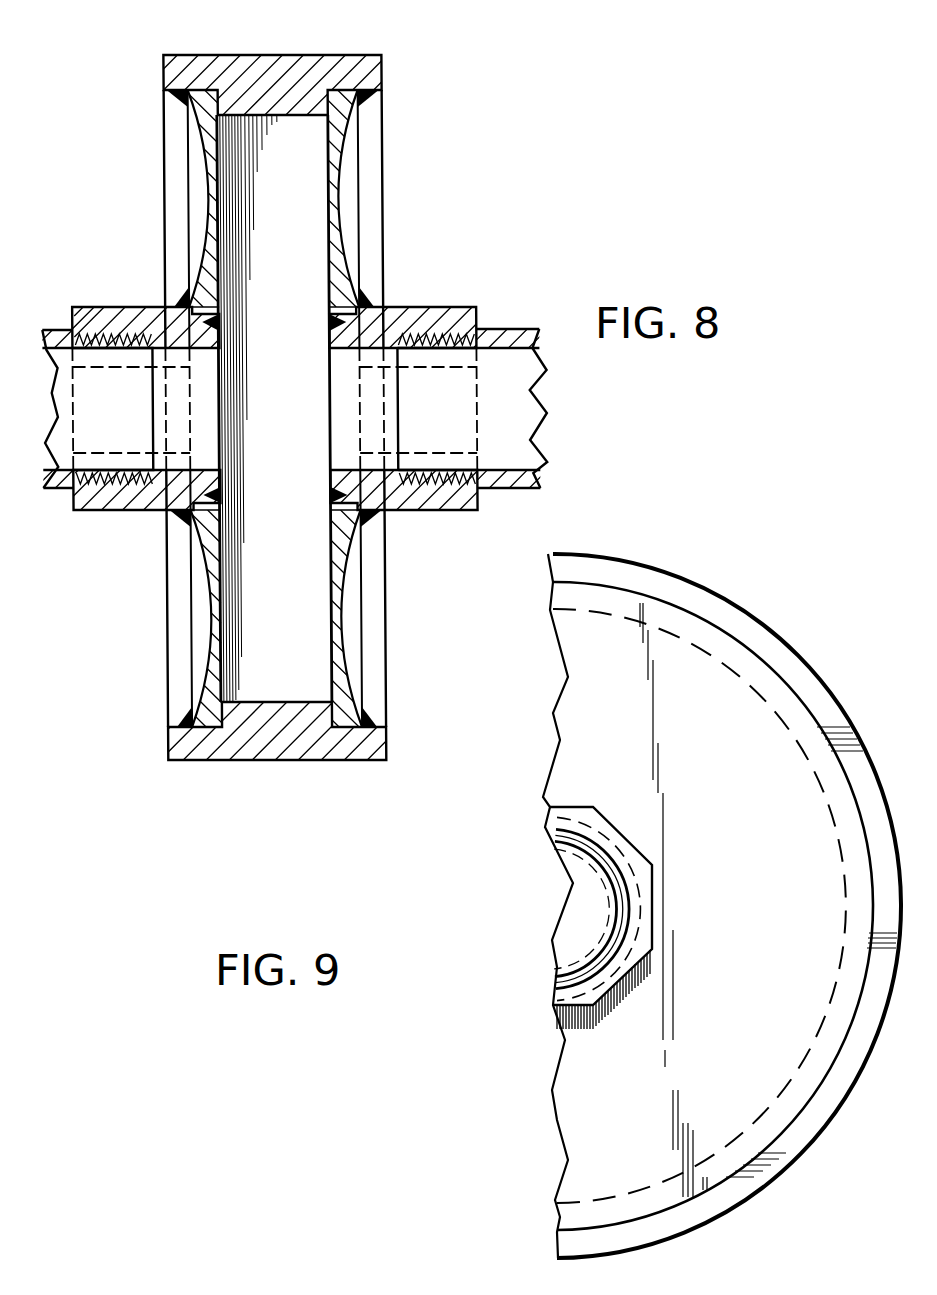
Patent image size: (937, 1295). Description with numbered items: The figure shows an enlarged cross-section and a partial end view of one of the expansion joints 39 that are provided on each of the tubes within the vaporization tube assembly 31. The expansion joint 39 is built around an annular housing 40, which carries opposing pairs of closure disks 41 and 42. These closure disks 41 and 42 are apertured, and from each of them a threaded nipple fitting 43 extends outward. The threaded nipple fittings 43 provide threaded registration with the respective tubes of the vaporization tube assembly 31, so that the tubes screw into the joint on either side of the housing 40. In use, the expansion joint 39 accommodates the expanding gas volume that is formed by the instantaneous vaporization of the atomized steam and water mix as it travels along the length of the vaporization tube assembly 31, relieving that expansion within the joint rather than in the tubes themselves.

In FIG. 8, the vaporization tube assembly 31 is at (63, 334).
In FIG. 9, the vaporization tube assembly 31 is at (623, 913).
In FIG. 8, the expansion joint 39 is at (400, 78).
In FIG. 9, the expansion joint 39 is at (776, 616).
In FIG. 8, the annular housing 40 is at (283, 64).
In FIG. 9, the annular housing 40 is at (635, 576).
In FIG. 8, the closure disk 41 is at (175, 243).
In FIG. 9, the closure disk 41 is at (582, 660).
In FIG. 8, the closure disk 42 is at (207, 185).
In FIG. 9, the closure disk 42 is at (568, 598).
In FIG. 8, the threaded nipple fitting 43 is at (455, 313).
In FIG. 9, the threaded nipple fitting 43 is at (587, 805).